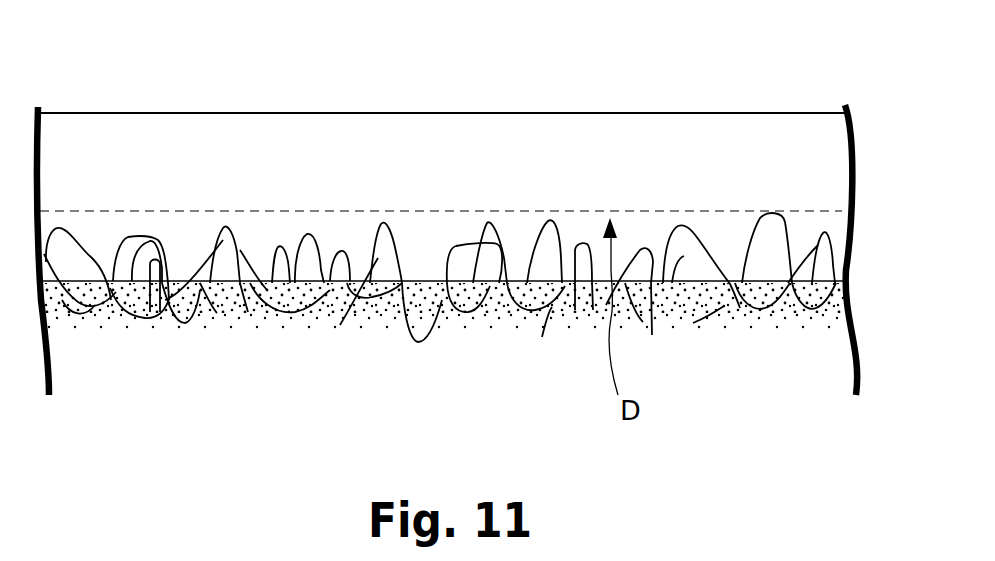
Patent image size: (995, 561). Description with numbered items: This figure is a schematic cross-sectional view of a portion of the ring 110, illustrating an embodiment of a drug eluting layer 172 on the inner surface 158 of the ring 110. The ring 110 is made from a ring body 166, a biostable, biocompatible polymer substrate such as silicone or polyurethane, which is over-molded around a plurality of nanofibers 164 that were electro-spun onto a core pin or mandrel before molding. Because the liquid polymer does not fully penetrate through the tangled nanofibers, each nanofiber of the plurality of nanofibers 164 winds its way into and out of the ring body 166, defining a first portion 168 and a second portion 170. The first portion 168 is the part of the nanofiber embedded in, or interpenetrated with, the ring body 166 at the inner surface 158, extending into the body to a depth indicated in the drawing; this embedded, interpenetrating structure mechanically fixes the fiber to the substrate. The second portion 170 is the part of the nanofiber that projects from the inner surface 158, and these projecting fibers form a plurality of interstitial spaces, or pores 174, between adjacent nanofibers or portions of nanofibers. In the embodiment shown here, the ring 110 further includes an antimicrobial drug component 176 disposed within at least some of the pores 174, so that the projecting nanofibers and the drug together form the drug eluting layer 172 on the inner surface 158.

The ring 110 is at (687, 114).
The inner surface 158 is at (490, 290).
The plurality of nanofibers 164 is at (196, 250).
The ring body 166 is at (458, 213).
The first portion 168 is at (187, 262).
The second portion 170 is at (143, 302).
The drug eluting layer 172 is at (371, 342).
The pores 174 is at (77, 302).
The antimicrobial drug component 176 is at (287, 322).